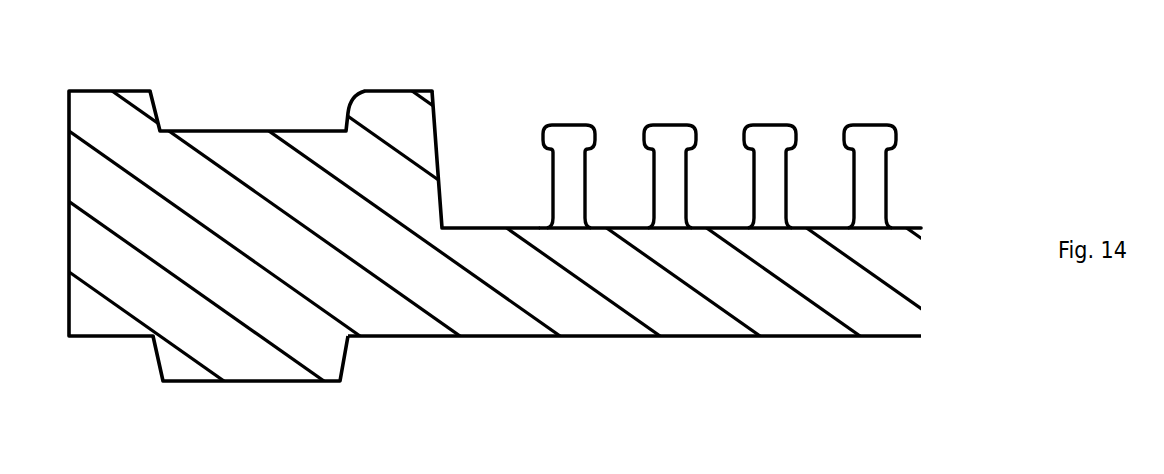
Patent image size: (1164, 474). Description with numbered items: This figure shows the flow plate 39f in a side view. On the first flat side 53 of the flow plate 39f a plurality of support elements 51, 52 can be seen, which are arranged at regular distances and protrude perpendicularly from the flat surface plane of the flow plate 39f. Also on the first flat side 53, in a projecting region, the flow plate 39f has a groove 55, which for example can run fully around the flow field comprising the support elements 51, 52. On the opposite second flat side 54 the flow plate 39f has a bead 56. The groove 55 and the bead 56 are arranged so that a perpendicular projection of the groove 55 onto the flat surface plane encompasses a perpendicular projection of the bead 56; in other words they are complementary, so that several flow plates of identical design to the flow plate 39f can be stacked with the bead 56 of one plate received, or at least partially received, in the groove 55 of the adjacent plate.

The flow plate 39f is at (948, 302).
The support element 51 is at (667, 137).
The support element 52 is at (767, 137).
The first flat side 53 is at (499, 189).
The second flat side 54 is at (424, 371).
The groove 55 is at (221, 112).
The bead 56 is at (203, 384).